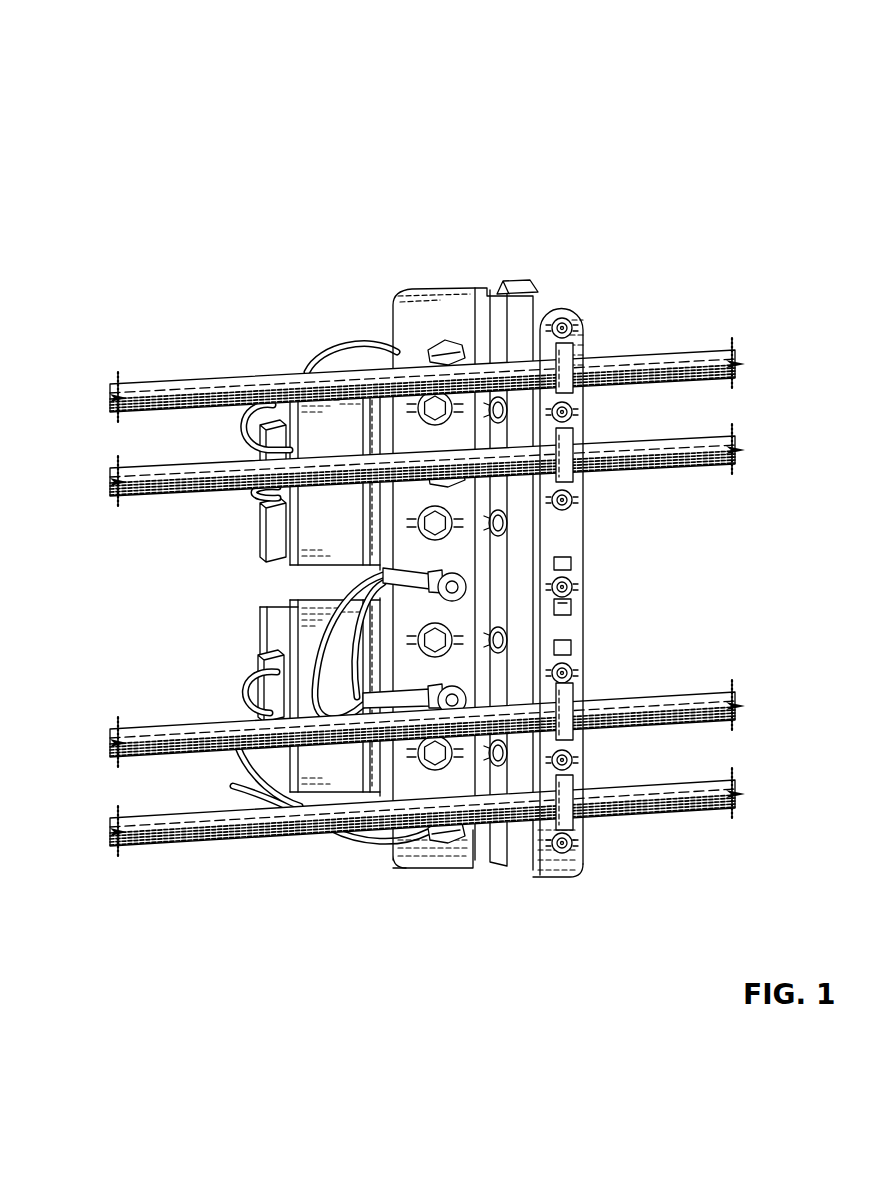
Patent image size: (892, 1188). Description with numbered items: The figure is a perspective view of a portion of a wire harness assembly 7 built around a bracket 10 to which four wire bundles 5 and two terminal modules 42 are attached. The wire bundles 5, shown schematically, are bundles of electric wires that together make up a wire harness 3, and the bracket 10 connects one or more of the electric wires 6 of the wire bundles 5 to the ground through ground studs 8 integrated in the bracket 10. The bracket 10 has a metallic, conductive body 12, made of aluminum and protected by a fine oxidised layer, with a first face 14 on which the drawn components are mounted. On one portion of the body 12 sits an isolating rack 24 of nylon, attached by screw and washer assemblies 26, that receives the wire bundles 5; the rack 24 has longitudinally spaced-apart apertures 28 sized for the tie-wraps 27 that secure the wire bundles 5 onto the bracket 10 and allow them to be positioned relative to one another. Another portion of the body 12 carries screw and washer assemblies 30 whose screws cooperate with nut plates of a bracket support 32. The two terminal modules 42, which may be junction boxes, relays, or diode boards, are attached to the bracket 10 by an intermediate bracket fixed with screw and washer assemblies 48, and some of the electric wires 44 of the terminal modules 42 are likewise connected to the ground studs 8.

The wire harness 3 is at (122, 342).
The wire bundles 5 is at (134, 485).
The electric wires 6 is at (375, 622).
The wire harness assembly 7 is at (240, 205).
The ground studs 8 is at (442, 478).
The bracket 10 is at (650, 103).
The body 12 is at (465, 291).
The first face 14 is at (428, 314).
The isolating rack 24 is at (580, 334).
The screw and washer assemblies 26 is at (574, 590).
The tie-wraps 27 is at (567, 438).
The apertures 28 is at (565, 604).
The screw and washer assemblies 30 is at (507, 517).
The bracket support 32 is at (517, 281).
The terminal modules 42 is at (232, 497).
The electric wires 44 is at (310, 355).
The screw and washer assemblies 48 is at (418, 640).